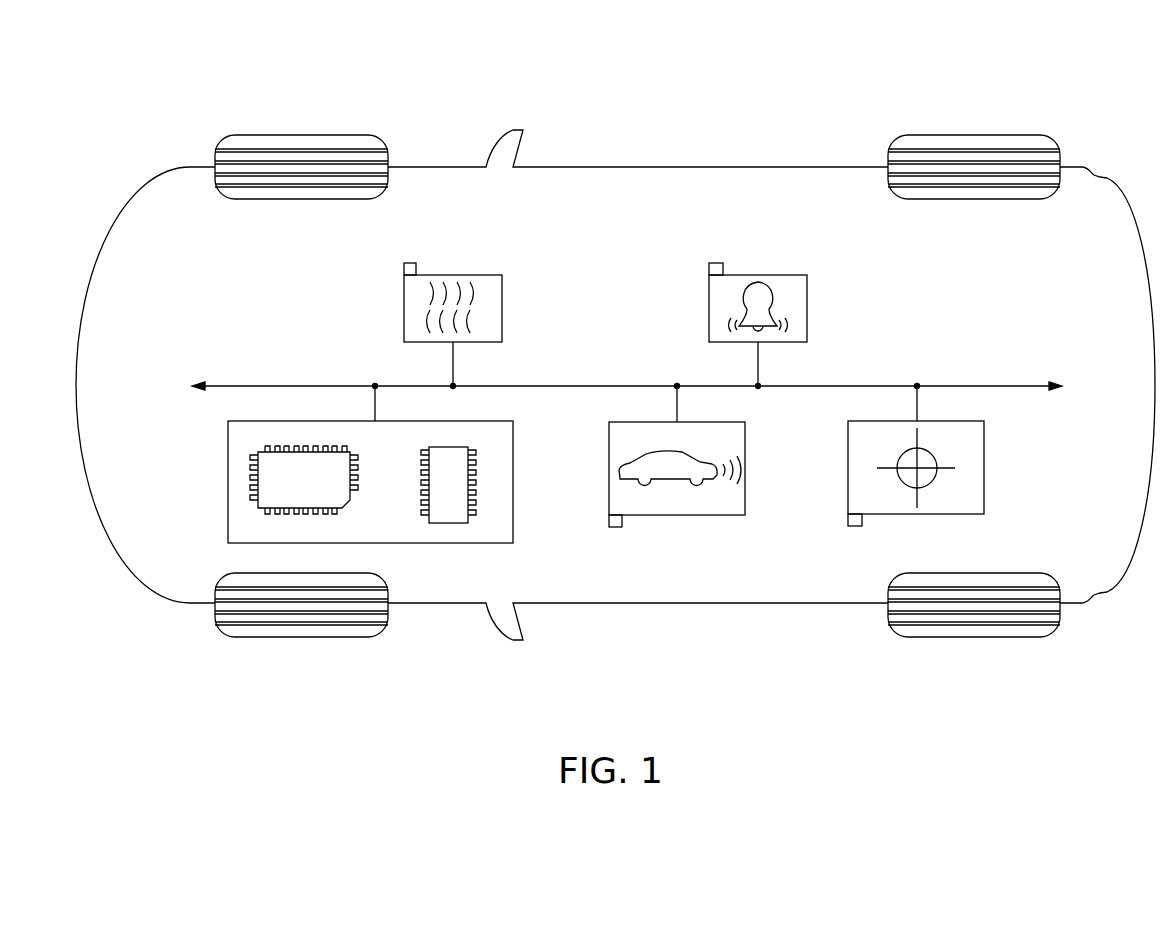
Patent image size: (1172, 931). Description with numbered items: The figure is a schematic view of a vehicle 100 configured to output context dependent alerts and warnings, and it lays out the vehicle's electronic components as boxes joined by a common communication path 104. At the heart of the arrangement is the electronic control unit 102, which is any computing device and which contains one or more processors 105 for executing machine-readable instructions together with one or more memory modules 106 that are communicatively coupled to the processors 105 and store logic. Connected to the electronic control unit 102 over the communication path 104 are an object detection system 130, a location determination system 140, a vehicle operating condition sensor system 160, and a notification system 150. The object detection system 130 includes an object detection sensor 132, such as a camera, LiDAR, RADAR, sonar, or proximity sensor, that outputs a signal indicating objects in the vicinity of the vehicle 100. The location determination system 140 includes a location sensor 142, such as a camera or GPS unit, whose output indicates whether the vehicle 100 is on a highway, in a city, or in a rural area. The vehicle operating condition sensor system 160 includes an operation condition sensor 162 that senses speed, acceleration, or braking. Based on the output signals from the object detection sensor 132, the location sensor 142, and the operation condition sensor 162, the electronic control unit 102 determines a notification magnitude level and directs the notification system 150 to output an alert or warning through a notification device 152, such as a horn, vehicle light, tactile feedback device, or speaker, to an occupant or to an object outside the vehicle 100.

The vehicle 100 is at (993, 118).
The electronic control unit 102 is at (407, 482).
The communication path 104 is at (262, 385).
The processors 105 is at (342, 506).
The memory modules 106 is at (425, 447).
The object detection system 130 is at (502, 307).
The object detection sensor 132 is at (410, 262).
The location determination system 140 is at (984, 468).
The location sensor 142 is at (855, 528).
The notification system 150 is at (807, 308).
The notification device 152 is at (716, 262).
The vehicle operating condition sensor system 160 is at (745, 465).
The operation condition sensor 162 is at (613, 528).